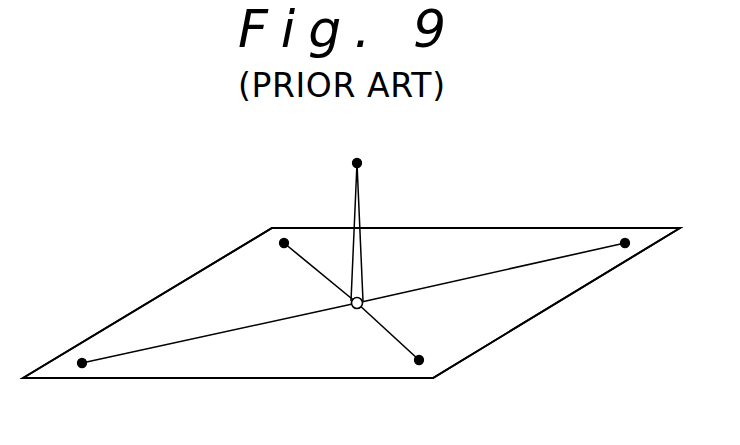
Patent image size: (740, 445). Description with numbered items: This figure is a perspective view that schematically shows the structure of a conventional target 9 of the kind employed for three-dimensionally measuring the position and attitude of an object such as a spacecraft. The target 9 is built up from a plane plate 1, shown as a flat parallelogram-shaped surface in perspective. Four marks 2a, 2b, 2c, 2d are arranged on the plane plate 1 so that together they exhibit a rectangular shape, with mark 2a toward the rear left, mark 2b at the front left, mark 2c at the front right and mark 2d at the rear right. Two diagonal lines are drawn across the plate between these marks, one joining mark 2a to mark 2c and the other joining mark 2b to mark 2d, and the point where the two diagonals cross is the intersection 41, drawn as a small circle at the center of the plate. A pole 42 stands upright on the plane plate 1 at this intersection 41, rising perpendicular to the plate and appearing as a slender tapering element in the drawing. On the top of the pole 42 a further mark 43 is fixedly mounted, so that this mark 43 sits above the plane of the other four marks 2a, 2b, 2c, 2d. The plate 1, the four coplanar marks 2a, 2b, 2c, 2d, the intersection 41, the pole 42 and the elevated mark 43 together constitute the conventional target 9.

The plane plate 1 is at (533, 228).
The target 9 is at (612, 228).
The mark 2a is at (288, 240).
The mark 2b is at (83, 367).
The mark 2c is at (419, 364).
The mark 2d is at (627, 248).
The intersection 41 is at (354, 309).
The pole 42 is at (360, 215).
The mark 43 is at (361, 159).